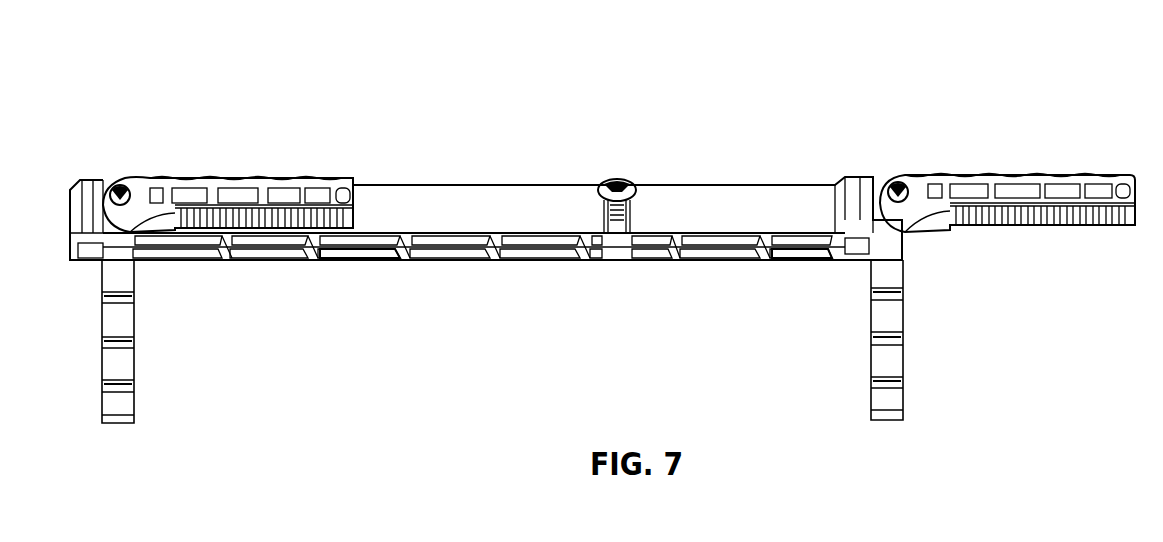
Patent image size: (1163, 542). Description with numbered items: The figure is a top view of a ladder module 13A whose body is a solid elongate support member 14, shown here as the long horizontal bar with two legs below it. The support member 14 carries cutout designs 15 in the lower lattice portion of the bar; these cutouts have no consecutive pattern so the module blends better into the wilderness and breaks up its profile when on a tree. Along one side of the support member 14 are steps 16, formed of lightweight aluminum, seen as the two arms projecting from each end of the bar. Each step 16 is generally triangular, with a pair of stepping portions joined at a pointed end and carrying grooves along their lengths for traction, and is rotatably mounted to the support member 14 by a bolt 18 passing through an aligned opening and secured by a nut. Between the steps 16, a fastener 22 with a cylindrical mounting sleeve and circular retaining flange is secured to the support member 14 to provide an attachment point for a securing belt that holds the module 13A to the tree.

The ladder module 13A is at (693, 120).
The support member 14 is at (437, 252).
The cutout designs 15 is at (340, 252).
The steps 16 is at (1085, 185).
The bolt 18 is at (121, 187).
The fastener 22 is at (621, 153).